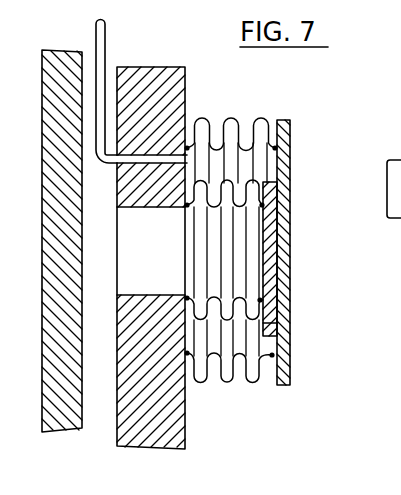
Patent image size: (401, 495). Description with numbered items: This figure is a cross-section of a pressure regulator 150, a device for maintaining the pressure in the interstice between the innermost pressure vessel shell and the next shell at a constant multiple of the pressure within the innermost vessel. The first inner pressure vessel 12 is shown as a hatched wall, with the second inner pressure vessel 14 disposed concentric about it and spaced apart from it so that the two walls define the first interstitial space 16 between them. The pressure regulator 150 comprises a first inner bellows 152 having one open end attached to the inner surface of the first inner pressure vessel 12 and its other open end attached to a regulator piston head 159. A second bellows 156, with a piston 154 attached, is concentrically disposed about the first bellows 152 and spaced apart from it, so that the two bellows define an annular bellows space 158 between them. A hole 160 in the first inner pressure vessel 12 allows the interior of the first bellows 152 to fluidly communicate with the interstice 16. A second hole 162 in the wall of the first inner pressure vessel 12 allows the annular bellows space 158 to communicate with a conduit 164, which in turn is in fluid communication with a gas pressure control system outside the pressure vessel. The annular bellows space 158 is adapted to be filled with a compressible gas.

The first inner pressure vessel 12 is at (133, 448).
The second inner pressure vessel 14 is at (64, 430).
The first interstitial space 16 is at (94, 419).
The pressure regulator 150 is at (318, 310).
The first inner bellows 152 is at (254, 180).
The piston 154 is at (289, 218).
The second bellows 156 is at (240, 122).
The annular bellows space 158 is at (245, 162).
The regulator piston head 159 is at (267, 278).
The hole 160 is at (163, 296).
The hole 162 is at (185, 148).
The conduit 164 is at (107, 37).